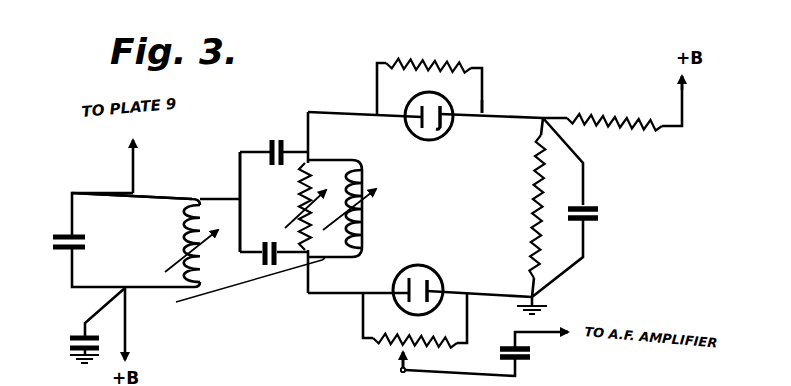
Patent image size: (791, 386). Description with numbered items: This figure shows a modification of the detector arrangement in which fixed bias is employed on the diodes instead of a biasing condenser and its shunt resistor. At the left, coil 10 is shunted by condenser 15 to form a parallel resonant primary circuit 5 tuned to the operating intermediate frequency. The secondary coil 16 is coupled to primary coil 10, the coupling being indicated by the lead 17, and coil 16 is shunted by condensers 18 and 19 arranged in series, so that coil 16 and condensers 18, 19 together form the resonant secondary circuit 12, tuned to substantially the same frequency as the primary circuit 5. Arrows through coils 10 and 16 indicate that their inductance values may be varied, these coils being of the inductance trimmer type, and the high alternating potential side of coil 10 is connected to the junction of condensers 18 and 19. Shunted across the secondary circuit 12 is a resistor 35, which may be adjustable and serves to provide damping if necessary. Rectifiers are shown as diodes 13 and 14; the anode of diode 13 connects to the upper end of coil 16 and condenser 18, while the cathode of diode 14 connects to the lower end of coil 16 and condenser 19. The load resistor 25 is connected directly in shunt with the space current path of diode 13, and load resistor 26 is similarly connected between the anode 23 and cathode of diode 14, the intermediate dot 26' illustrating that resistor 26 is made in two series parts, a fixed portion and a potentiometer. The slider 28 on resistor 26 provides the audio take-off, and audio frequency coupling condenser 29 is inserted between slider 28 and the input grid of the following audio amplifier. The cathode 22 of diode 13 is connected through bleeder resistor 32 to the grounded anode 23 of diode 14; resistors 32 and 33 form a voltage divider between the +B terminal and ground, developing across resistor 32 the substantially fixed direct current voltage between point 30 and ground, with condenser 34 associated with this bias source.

The primary circuit 5 is at (150, 213).
The coil 10 is at (183, 226).
The secondary circuit 12 is at (285, 178).
The diode 13 is at (432, 140).
The diode 14 is at (428, 265).
The condenser 15 is at (58, 243).
The secondary coil 16 is at (365, 213).
The coupling 17 is at (261, 283).
The condenser 18 is at (276, 138).
The condenser 19 is at (259, 258).
The cathode 22 is at (448, 119).
The anode 23 is at (432, 287).
The load resistor 25 is at (446, 62).
The load resistor 26 is at (393, 329).
The intermediate dot 26' is at (385, 356).
The slider 28 is at (410, 364).
The audio frequency coupling condenser 29 is at (533, 353).
The point 30 is at (484, 112).
The bleeder resistor 32 is at (537, 200).
The resistor 33 is at (612, 118).
The condenser 34 is at (597, 210).
The resistor 35 is at (285, 228).